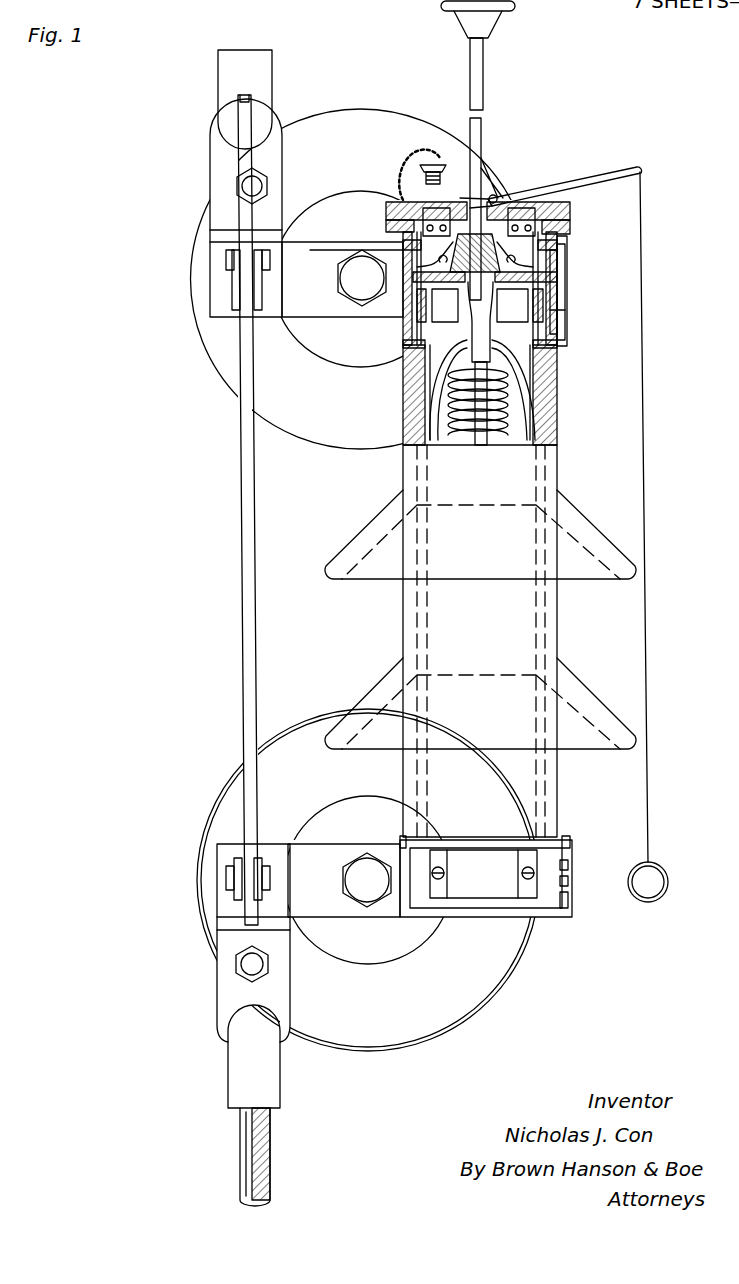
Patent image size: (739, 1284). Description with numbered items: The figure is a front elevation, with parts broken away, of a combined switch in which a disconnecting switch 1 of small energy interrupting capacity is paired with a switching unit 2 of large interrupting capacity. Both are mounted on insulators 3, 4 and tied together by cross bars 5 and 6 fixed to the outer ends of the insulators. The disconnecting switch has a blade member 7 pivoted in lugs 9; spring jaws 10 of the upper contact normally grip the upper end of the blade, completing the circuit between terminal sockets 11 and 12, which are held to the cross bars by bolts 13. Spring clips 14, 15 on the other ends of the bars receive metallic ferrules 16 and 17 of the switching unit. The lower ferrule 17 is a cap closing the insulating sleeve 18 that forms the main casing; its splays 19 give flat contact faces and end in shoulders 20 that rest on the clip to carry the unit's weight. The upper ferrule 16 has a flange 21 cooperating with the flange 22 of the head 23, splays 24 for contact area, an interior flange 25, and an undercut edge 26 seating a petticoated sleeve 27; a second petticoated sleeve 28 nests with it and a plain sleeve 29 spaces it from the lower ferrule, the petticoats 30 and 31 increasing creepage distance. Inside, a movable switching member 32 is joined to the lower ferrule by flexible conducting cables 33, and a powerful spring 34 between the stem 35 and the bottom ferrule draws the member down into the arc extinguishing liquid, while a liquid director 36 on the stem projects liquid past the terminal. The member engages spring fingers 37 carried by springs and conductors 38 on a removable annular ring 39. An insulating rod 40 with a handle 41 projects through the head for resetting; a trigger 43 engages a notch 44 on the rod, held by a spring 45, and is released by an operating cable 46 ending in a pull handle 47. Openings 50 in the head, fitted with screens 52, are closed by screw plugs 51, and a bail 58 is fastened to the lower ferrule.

The disconnecting switch 1 is at (208, 628).
The switching unit 2 is at (560, 456).
The insulator 3 is at (214, 322).
The insulator 4 is at (230, 792).
The cross bar 5 is at (306, 326).
The cross bar 6 is at (325, 905).
The blade member 7 is at (242, 486).
The lugs 9 is at (220, 846).
The spring jaws 10 is at (248, 258).
The terminal socket 11 is at (258, 74).
The terminal socket 12 is at (236, 1048).
The bolts 13 is at (236, 186).
The spring clip 14 is at (566, 268).
The spring clip 15 is at (562, 904).
The ferrule 16 is at (558, 244).
The ferrule 17 is at (547, 906).
The sleeve 18 is at (560, 406).
The splays 19 is at (562, 878).
The shoulders 20 is at (400, 838).
The flange 21 is at (398, 224).
The flange 22 is at (398, 210).
The head 23 is at (562, 216).
The splays 24 is at (404, 318).
The interior flange 25 is at (386, 278).
The undercut edge 26 is at (404, 372).
The petticoated sleeve 27 is at (404, 406).
The petticoated sleeve 28 is at (404, 612).
The plain sleeve 29 is at (560, 785).
The petticoat 30 is at (612, 553).
The petticoat 31 is at (612, 733).
The movable switching member 32 is at (558, 332).
The flexible conducting cables 33 is at (560, 384).
The spring 34 is at (452, 442).
The stem 35 is at (410, 346).
The liquid director 36 is at (600, 336).
The spring fingers 37 is at (352, 250).
The springs and conductors 38 is at (558, 290).
The removable annular ring 39 is at (558, 308).
The rod 40 is at (485, 78).
The handle 41 is at (490, 20).
The trigger 43 is at (500, 195).
The notch 44 is at (484, 152).
The spring 45 is at (570, 197).
The operating cable 46 is at (644, 360).
The pull handle 47 is at (664, 864).
The openings 50 is at (410, 192).
The screw plugs 51 is at (438, 160).
The screens 52 is at (396, 201).
The bail 58 is at (496, 900).